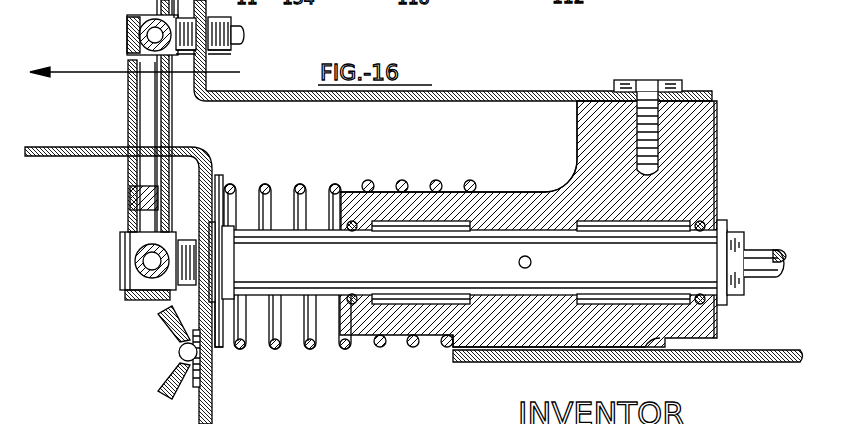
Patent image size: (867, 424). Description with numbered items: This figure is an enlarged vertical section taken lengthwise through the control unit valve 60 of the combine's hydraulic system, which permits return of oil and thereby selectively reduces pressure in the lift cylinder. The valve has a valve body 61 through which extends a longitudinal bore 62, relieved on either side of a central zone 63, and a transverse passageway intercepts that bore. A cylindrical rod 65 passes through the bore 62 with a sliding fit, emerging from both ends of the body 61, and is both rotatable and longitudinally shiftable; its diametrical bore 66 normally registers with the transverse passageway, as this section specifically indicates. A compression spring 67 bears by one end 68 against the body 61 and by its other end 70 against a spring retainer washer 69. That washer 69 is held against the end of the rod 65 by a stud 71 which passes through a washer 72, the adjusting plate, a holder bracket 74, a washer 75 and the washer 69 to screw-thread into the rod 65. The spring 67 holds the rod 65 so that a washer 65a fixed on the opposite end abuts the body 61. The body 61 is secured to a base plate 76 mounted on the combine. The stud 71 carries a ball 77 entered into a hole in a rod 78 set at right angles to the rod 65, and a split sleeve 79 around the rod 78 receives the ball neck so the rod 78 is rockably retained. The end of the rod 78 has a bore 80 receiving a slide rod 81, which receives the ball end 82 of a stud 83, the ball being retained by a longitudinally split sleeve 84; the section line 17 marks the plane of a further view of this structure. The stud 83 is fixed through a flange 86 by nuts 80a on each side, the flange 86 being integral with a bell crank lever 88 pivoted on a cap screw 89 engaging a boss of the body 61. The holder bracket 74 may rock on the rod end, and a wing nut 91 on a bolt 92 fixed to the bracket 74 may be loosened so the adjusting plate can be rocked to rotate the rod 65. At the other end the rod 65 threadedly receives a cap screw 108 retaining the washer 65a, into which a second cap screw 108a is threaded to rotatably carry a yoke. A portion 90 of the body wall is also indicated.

The section line 17 is at (146, 77).
The control unit valve 60 is at (721, 166).
The valve body 61 is at (577, 172).
The longitudinal bore 62 is at (521, 228).
The central zone 63 is at (502, 310).
The cylindrical rod 65 is at (432, 269).
The washer 65a is at (728, 222).
The diametrical bore 66 is at (531, 260).
The compression spring 67 is at (297, 177).
The spring end 68 is at (458, 180).
The spring retainer washer 69 is at (219, 178).
The spring end 70 is at (222, 350).
The stud 71 is at (180, 240).
The washer 72 is at (200, 222).
The holder bracket 74 is at (72, 152).
The washer 75 is at (226, 260).
The base plate 76 is at (762, 362).
The ball 77 is at (148, 298).
The rod 78 is at (140, 222).
The split sleeve 79 is at (125, 263).
The bore 80 is at (164, 126).
The nuts 80a is at (186, 55).
The slide rod 81 is at (146, 107).
The ball end 82 is at (134, 40).
The stud 83 is at (243, 36).
The sleeve 84 is at (130, 28).
The flange 86 is at (228, 2).
The bell crank lever 88 is at (532, 93).
The cap screw 89 is at (652, 82).
The housing wall 90 is at (706, 130).
The wing nut 91 is at (158, 386).
The bolt 92 is at (178, 352).
The cap screw 108 is at (745, 290).
The second cap screw 108a is at (760, 252).